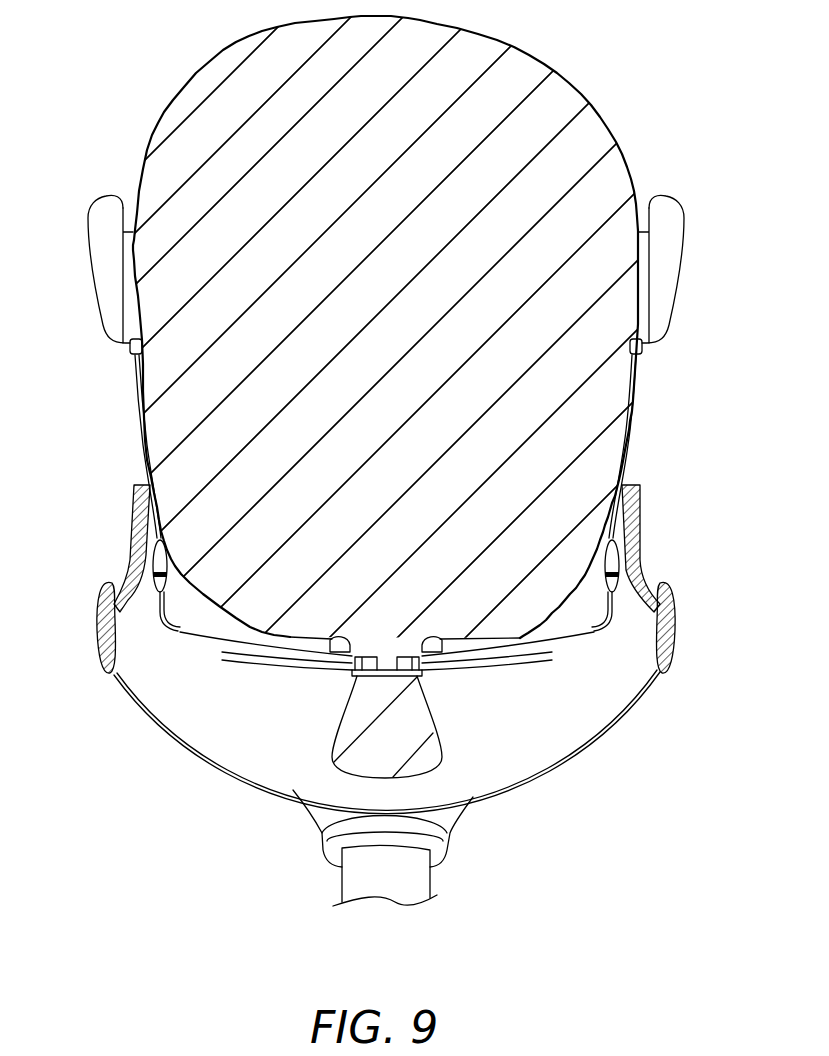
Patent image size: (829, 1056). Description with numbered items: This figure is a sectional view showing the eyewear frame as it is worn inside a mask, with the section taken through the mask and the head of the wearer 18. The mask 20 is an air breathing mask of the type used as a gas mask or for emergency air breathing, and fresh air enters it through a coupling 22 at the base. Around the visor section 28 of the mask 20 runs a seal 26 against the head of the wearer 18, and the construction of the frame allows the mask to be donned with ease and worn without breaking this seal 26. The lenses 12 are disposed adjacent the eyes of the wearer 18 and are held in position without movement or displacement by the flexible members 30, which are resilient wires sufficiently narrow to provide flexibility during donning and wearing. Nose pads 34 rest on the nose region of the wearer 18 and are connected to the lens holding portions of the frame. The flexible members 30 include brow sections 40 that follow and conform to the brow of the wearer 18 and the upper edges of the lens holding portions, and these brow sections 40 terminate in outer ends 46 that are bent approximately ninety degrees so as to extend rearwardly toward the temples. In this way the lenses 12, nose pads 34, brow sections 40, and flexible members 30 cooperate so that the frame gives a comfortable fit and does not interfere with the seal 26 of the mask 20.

The lenses 12 is at (260, 668).
The wearer 18 is at (603, 118).
The mask 20 is at (676, 628).
The coupling 22 is at (440, 835).
The seal 26 is at (131, 548).
The visor section 28 is at (393, 710).
The flexible members 30 is at (637, 407).
The nose pads 34 is at (345, 650).
The brow sections 40 is at (285, 640).
The outer ends 46 is at (612, 613).